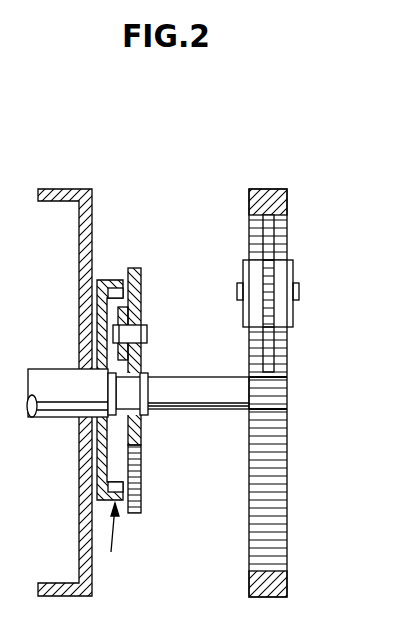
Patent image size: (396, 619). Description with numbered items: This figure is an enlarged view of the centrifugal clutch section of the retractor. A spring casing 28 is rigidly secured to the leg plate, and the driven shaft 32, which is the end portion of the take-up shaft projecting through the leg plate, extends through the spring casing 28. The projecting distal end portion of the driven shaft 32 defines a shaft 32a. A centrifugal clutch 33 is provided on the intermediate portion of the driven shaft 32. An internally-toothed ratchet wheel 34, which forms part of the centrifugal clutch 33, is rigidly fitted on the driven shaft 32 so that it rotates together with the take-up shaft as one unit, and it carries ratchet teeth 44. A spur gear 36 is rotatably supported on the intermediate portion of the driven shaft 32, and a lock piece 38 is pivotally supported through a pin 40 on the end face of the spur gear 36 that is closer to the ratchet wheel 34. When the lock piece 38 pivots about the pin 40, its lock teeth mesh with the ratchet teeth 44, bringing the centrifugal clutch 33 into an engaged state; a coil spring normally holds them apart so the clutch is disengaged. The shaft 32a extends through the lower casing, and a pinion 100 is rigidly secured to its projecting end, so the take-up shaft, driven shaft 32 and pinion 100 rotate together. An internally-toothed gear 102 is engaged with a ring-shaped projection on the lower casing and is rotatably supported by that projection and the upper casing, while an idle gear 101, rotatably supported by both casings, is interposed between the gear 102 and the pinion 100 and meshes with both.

The spring casing 28 is at (92, 233).
The driven shaft 32 is at (57, 404).
The shaft 32a is at (197, 398).
The centrifugal clutch 33 is at (115, 543).
The internally-toothed ratchet wheel 34 is at (118, 280).
The spur gear 36 is at (135, 513).
The lock piece 38 is at (128, 350).
The pin 40 is at (147, 332).
The ratchet teeth 44 is at (141, 292).
The pinion 100 is at (272, 398).
The idle gear 101 is at (270, 258).
The internally-toothed gear 102 is at (268, 550).